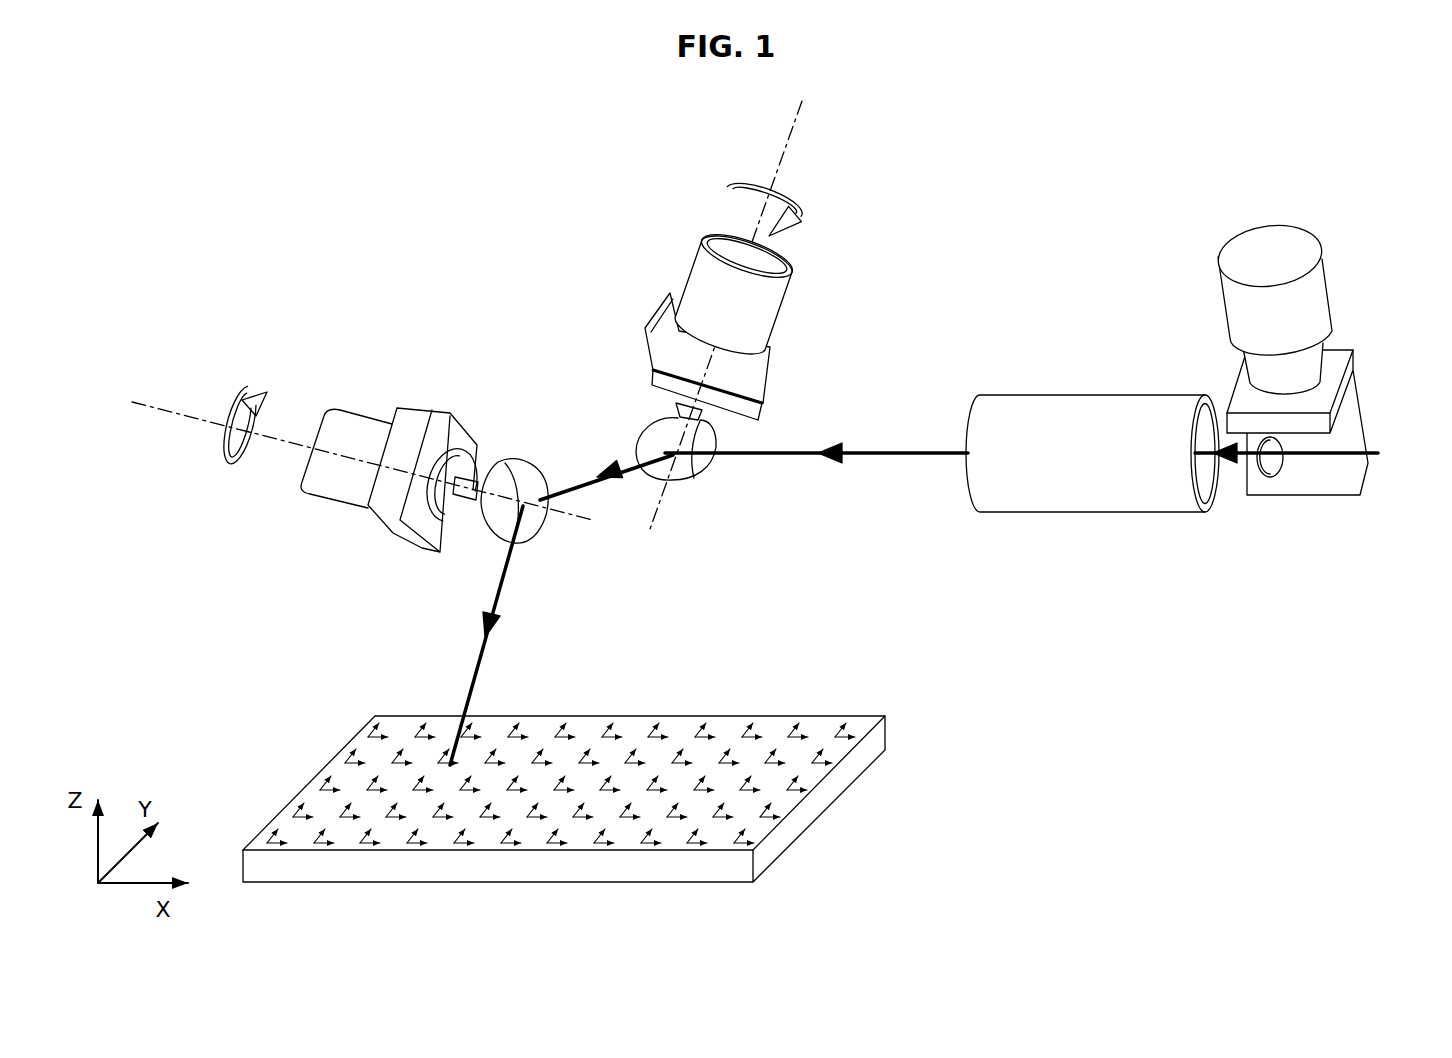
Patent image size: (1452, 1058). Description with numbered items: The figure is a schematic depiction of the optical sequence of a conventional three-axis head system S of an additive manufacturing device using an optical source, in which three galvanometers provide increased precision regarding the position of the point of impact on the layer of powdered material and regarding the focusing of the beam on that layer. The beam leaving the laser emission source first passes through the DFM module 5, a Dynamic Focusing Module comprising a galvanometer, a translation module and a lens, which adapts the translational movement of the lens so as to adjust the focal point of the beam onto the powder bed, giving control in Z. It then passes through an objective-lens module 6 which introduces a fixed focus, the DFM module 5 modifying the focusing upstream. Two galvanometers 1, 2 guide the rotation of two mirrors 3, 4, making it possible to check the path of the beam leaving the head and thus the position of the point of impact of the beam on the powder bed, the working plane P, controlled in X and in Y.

The galvanometer 1 is at (407, 392).
The galvanometer 2 is at (792, 338).
The mirror 3 is at (540, 526).
The mirror 4 is at (681, 488).
The DFM module 5 is at (1376, 352).
The objective-lens module 6 is at (1100, 382).
The working plane P is at (818, 799).
The three-axis head system S is at (392, 197).